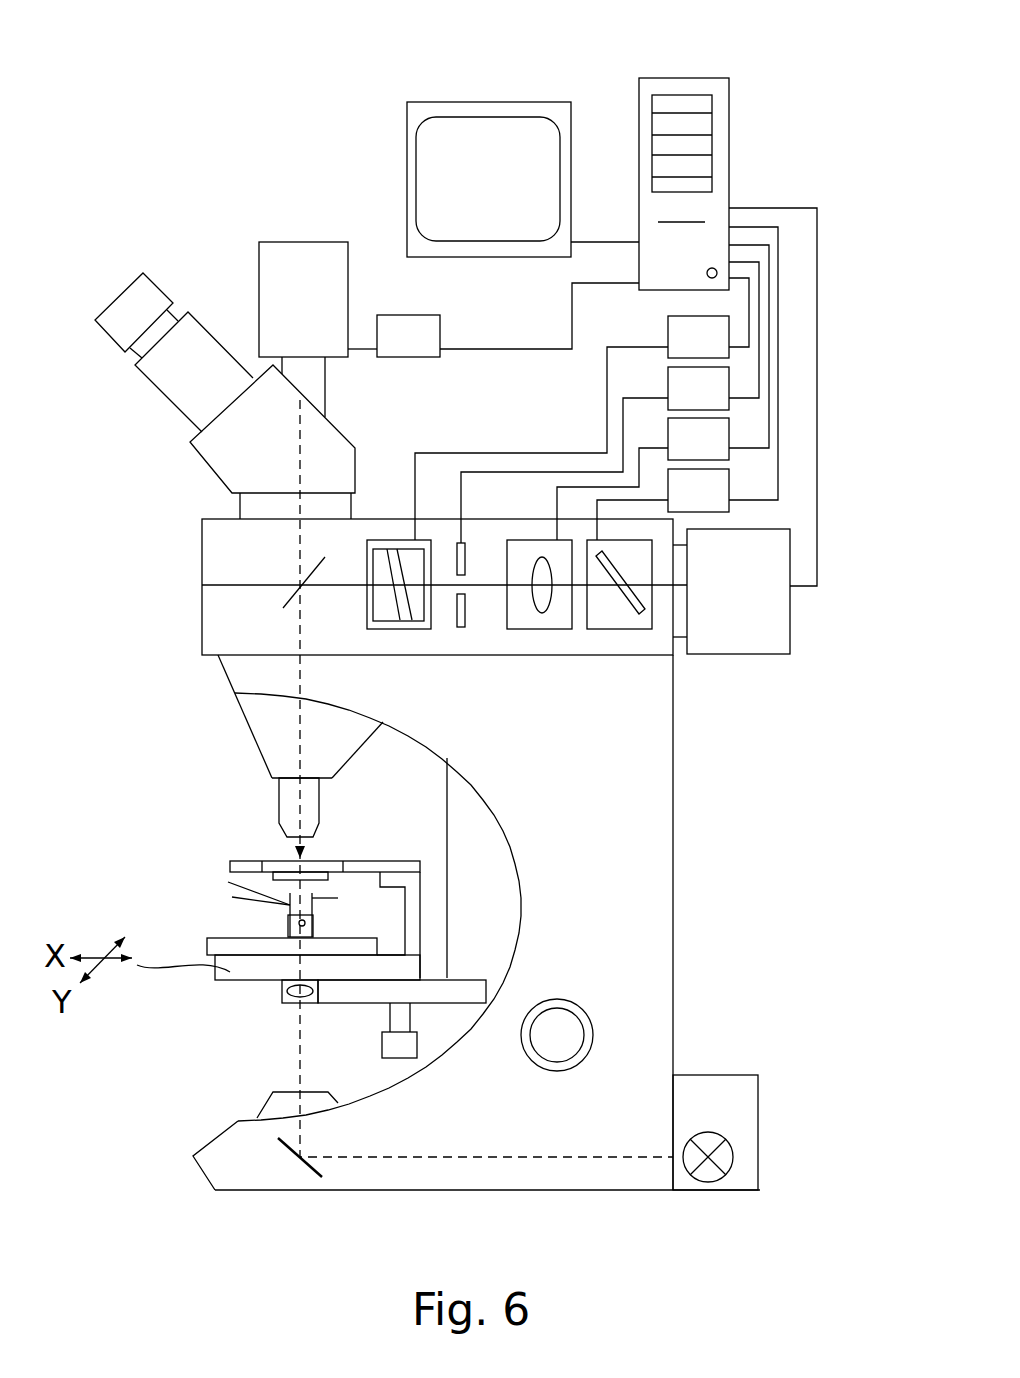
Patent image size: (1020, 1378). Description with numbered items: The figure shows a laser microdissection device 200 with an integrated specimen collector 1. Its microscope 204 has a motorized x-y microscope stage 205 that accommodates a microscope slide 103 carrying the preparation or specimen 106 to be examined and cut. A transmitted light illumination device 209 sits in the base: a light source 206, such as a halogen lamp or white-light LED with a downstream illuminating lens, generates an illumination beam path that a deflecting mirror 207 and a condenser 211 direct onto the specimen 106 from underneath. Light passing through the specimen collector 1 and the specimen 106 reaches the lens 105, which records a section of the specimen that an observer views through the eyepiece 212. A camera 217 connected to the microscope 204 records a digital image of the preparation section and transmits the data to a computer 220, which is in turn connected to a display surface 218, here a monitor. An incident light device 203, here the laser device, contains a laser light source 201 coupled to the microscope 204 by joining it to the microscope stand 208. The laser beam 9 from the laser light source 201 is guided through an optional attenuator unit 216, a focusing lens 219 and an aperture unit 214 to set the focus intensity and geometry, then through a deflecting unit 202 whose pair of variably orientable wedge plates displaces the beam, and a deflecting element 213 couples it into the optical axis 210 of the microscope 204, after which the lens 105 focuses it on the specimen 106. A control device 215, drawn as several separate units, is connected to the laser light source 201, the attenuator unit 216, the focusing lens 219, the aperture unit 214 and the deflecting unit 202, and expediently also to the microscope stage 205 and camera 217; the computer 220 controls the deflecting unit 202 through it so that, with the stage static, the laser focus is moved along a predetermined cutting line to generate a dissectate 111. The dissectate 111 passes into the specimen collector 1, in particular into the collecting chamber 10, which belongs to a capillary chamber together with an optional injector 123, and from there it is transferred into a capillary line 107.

The laser microdissection device 200 is at (150, 122).
The eyepiece 212 is at (143, 297).
The camera 217 is at (302, 265).
The display surface 218 is at (500, 107).
The computer 220 is at (683, 85).
The control device 215 is at (582, 397).
The microscope 204 is at (188, 552).
The deflecting element 213 is at (290, 599).
The deflecting unit 202 is at (402, 622).
The aperture unit 214 is at (465, 617).
The focusing lens 219 is at (537, 618).
The attenuator unit 216 is at (633, 617).
The laser beam 9 is at (677, 590).
The incident light device 203 is at (794, 627).
The laser light source 201 is at (757, 645).
The microscope stand 208 is at (648, 806).
The lens 105 is at (310, 802).
The preparation (specimen) 106 is at (323, 870).
The microscope slide 103 is at (278, 868).
The specimen collector 1 is at (150, 868).
The injector 123 is at (224, 884).
The collecting chamber 10 is at (287, 921).
The dissectate 111 is at (307, 927).
The capillary line 107 is at (348, 945).
The microscope stage 205 is at (258, 972).
The condenser 211 is at (280, 995).
The optical axis 210 is at (300, 1053).
The transmitted light illumination device 209 is at (200, 1140).
The deflecting mirror 207 is at (313, 1168).
The light source 206 is at (758, 1157).